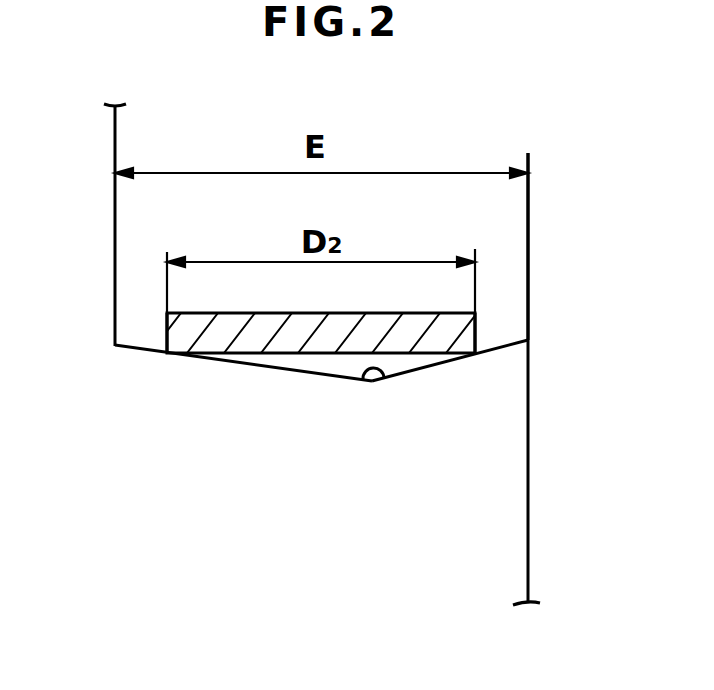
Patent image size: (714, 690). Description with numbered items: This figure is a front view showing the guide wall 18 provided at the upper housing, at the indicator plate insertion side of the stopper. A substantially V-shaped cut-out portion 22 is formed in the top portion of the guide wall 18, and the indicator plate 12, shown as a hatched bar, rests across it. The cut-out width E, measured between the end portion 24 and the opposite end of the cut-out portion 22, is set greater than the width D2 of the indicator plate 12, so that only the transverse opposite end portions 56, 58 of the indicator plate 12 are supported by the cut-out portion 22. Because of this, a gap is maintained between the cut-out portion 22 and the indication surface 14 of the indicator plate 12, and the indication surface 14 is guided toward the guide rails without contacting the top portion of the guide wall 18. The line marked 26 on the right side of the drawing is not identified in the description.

The indicator plate 12 is at (320, 311).
The indication surface 14 is at (287, 357).
The guide wall 18 is at (528, 500).
The cut-out portion 22 is at (385, 380).
The end portion 24 is at (114, 348).
The second edge line 26 is at (528, 333).
The transverse end portion 56 is at (478, 356).
The transverse end portion 58 is at (165, 353).